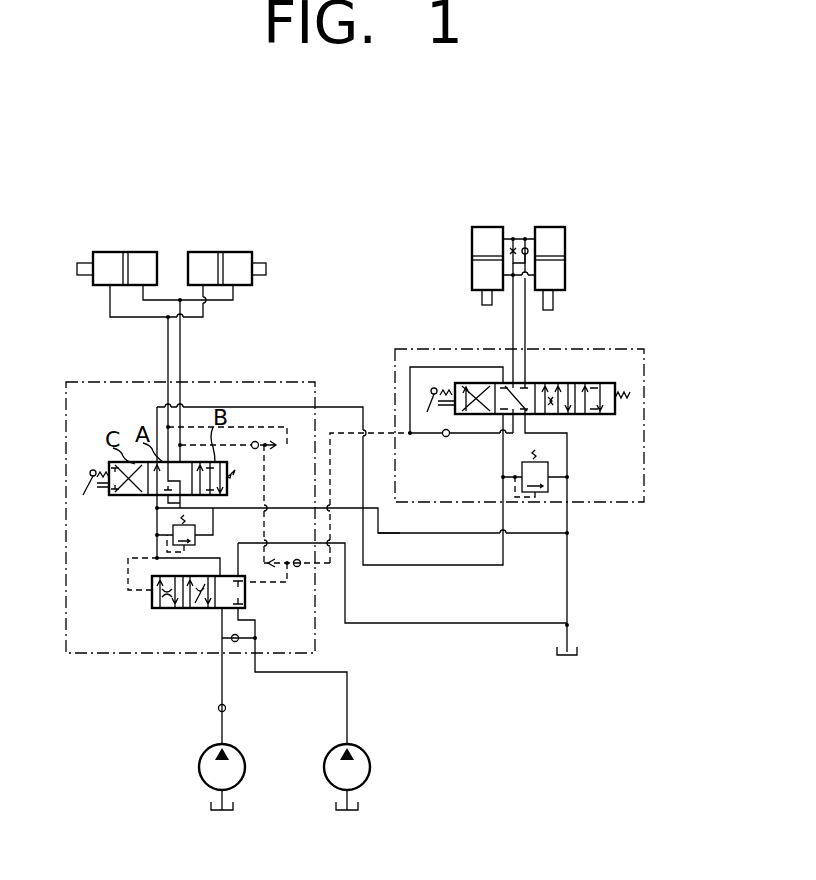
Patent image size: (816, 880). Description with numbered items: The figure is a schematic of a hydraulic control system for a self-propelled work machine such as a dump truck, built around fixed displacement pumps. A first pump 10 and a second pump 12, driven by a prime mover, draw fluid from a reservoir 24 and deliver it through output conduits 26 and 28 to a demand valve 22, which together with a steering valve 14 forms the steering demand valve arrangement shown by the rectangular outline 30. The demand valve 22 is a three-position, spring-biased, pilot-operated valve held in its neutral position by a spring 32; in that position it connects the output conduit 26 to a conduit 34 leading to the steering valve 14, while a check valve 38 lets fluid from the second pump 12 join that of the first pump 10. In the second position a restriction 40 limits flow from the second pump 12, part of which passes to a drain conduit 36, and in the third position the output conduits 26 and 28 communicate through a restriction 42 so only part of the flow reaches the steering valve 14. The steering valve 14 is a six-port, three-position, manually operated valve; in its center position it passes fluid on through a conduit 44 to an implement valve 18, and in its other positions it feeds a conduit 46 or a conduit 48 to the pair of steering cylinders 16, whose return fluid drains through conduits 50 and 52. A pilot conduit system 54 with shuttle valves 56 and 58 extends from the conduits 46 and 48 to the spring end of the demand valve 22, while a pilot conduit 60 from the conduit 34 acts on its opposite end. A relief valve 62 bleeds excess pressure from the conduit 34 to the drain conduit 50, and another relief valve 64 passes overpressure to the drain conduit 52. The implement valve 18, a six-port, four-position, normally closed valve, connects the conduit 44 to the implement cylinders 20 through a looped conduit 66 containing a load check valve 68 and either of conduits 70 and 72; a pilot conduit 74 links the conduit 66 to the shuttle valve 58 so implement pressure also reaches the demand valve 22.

The first fixed displacement pump 10 is at (197, 755).
The second fixed displacement pump 12 is at (370, 756).
The steering valve 14 is at (112, 501).
The steering cylinders 16 is at (162, 259).
The implement valve 18 is at (612, 366).
The implement cylinders 20 is at (508, 227).
The demand valve 22 is at (143, 612).
The reservoir 24 is at (212, 812).
The output conduit 26 is at (217, 691).
The output conduit 28 is at (350, 699).
The steering demand valve arrangement 30 is at (66, 512).
The spring 32 is at (247, 597).
The conduit 34 is at (157, 522).
The drain conduit 36 is at (423, 623).
The check valve 38 is at (257, 637).
The restriction 40 is at (200, 602).
The restriction 42 is at (167, 608).
The conduit 44 is at (345, 407).
The conduit 46 is at (168, 342).
The conduit 48 is at (181, 342).
The drain conduit 50 is at (420, 533).
The drain conduit 52 is at (570, 555).
The pilot conduit system 54 is at (269, 466).
The shuttle valve 56 is at (257, 446).
The shuttle valve 58 is at (292, 576).
The pilot conduit 60 is at (128, 585).
The relief valve 62 is at (202, 532).
The relief valve 64 is at (550, 444).
The looped conduit 66 is at (435, 365).
The load check valve 68 is at (446, 438).
The conduit 70 is at (513, 319).
The conduit 72 is at (528, 324).
The pilot conduit 74 is at (331, 464).